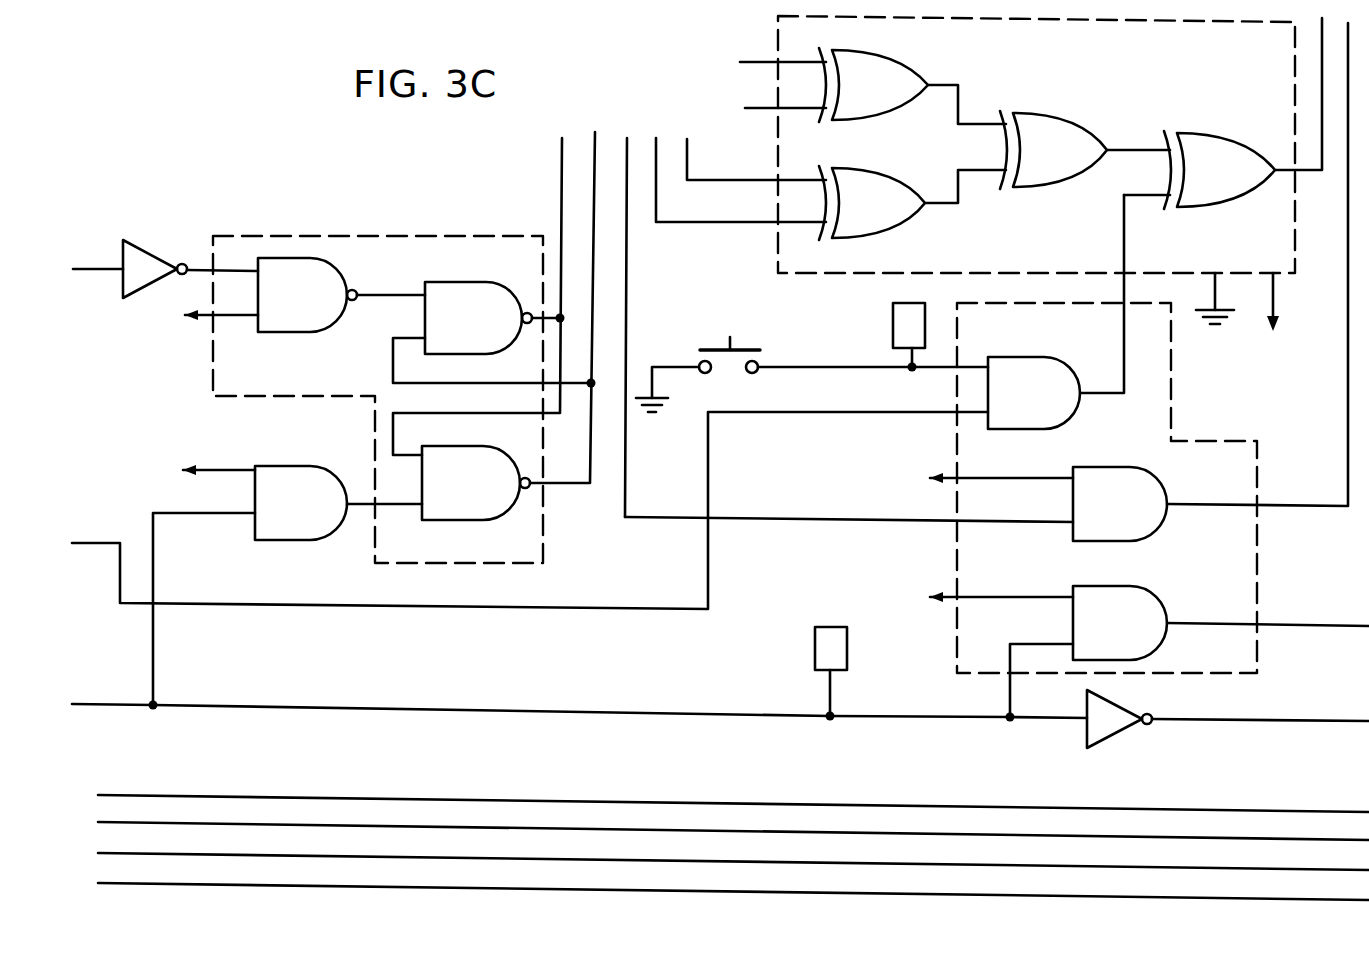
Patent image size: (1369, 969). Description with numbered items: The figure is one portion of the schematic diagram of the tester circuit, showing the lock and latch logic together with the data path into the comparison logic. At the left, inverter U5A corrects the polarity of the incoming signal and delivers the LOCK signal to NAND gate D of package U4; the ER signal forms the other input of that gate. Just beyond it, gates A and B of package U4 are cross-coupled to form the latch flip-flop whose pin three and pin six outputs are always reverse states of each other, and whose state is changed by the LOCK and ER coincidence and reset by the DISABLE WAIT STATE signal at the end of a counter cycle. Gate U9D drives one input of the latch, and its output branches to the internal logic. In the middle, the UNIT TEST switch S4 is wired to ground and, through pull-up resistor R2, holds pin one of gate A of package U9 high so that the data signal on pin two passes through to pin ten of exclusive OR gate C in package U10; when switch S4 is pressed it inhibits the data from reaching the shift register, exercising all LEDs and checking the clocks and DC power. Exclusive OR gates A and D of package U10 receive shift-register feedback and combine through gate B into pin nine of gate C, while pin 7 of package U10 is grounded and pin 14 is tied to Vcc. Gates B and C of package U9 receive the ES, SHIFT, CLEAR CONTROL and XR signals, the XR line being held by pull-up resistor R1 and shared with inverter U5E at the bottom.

The inverter U5A is at (165, 242).
The NAND gate package U4 is at (334, 399).
The AND gate U9D is at (265, 577).
The exclusive OR gate package U10 is at (1050, 188).
The ground pin 7 is at (1215, 298).
The Vcc supply pin 14 is at (1278, 317).
The UNIT TEST switch S4 is at (812, 338).
The pull-up resistor R2 is at (884, 331).
The AND gate package U9 is at (1106, 370).
The pull-up resistor R1 is at (857, 671).
The inverter U5E is at (1219, 729).